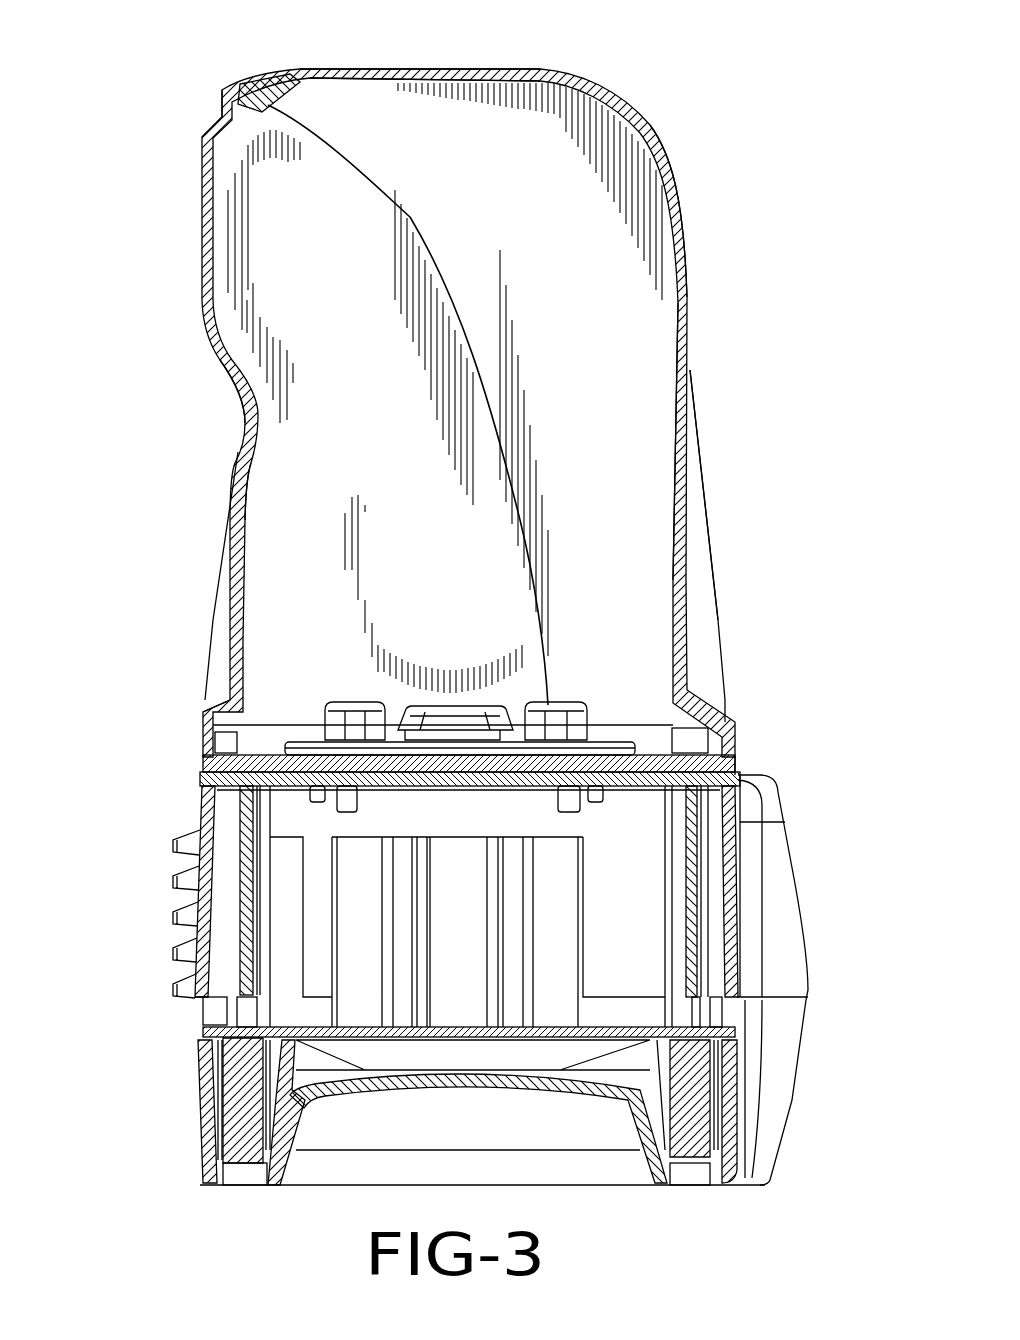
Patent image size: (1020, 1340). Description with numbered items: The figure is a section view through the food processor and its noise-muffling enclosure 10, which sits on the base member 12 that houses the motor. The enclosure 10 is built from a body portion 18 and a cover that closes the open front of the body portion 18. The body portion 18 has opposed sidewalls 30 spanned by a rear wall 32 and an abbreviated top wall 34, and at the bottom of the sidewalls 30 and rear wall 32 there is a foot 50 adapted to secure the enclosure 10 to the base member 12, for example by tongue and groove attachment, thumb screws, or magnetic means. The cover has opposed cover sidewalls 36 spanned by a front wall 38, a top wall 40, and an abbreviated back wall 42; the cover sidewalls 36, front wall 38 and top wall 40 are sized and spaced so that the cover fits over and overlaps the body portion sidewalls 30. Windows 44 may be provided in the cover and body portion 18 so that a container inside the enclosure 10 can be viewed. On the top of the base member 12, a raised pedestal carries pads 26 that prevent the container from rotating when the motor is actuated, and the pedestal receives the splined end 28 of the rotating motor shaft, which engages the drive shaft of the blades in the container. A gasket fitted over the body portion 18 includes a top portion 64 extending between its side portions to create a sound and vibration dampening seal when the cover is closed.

The enclosure 10 is at (74, 106).
The base member 12 is at (792, 813).
The body portion 18 is at (230, 578).
The pads 26 is at (330, 705).
The splined end 28 is at (450, 707).
The sidewalls 30 is at (262, 465).
The rear wall 32 is at (240, 432).
The abbreviated top wall 34 is at (243, 120).
The cover sidewalls 36 is at (645, 398).
The front wall 38 is at (690, 240).
The top wall 40 is at (456, 71).
The abbreviated back wall 42 is at (224, 112).
The windows 44 is at (690, 549).
The foot 50 is at (640, 722).
The top portion 64 is at (262, 108).